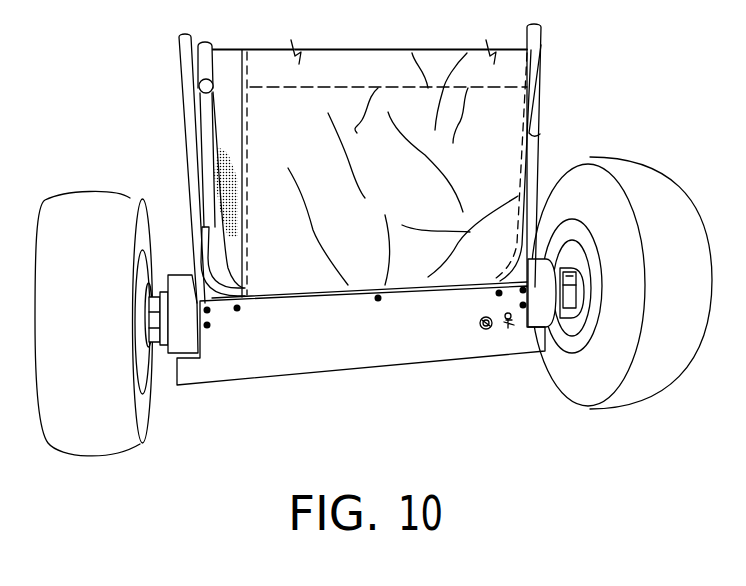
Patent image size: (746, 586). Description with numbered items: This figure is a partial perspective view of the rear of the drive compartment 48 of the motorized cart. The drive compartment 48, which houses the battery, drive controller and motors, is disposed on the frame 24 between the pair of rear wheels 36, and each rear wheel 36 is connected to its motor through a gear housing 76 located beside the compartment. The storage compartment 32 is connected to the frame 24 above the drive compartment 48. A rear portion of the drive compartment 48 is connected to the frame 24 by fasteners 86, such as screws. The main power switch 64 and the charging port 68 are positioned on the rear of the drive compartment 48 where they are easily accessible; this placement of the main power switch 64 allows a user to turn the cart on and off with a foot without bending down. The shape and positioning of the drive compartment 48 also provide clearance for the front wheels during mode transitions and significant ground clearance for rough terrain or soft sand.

The frame 24 is at (187, 138).
The storage compartment 32 is at (545, 97).
The rear wheels 36 is at (100, 192).
The drive compartment 48 is at (380, 370).
The main power switch 64 is at (507, 330).
The charging port 68 is at (484, 330).
The gear housing 76 is at (182, 275).
The fasteners 86 is at (209, 328).